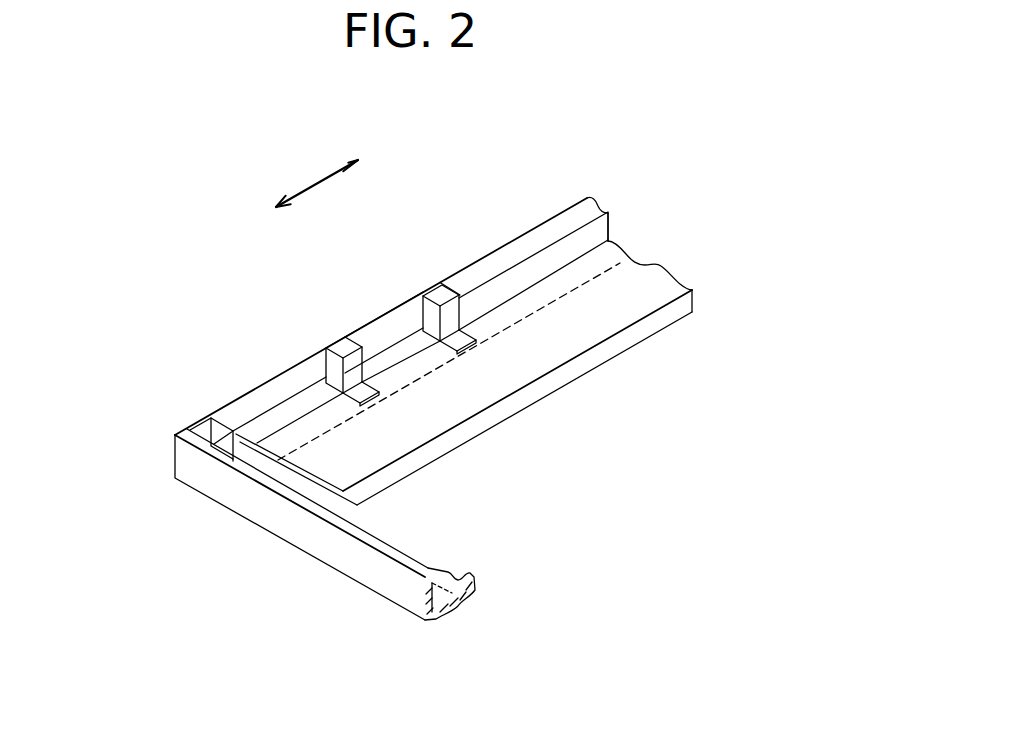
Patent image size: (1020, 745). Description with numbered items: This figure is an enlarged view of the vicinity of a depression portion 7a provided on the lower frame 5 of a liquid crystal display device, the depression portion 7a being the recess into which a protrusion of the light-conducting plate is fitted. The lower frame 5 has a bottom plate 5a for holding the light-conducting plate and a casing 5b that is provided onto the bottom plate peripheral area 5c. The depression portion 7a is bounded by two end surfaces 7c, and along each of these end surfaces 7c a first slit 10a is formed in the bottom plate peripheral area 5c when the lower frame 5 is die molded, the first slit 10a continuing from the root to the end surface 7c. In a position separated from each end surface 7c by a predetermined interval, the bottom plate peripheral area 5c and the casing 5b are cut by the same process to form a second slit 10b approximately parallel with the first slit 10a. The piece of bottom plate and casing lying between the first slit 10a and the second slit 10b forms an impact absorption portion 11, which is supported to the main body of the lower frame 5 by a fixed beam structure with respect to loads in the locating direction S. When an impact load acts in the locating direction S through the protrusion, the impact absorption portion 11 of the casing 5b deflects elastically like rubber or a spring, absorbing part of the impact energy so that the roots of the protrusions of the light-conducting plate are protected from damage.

The lower frame 5 is at (207, 311).
The bottom plate 5a is at (613, 320).
The casing 5b is at (541, 243).
The bottom plate peripheral area 5c is at (625, 217).
The depression portion 7a is at (407, 363).
The end surfaces 7c is at (422, 317).
The first slit 10a is at (463, 350).
The second slit 10b is at (480, 338).
The impact absorption portion 11 is at (343, 351).
The locating direction S is at (315, 183).